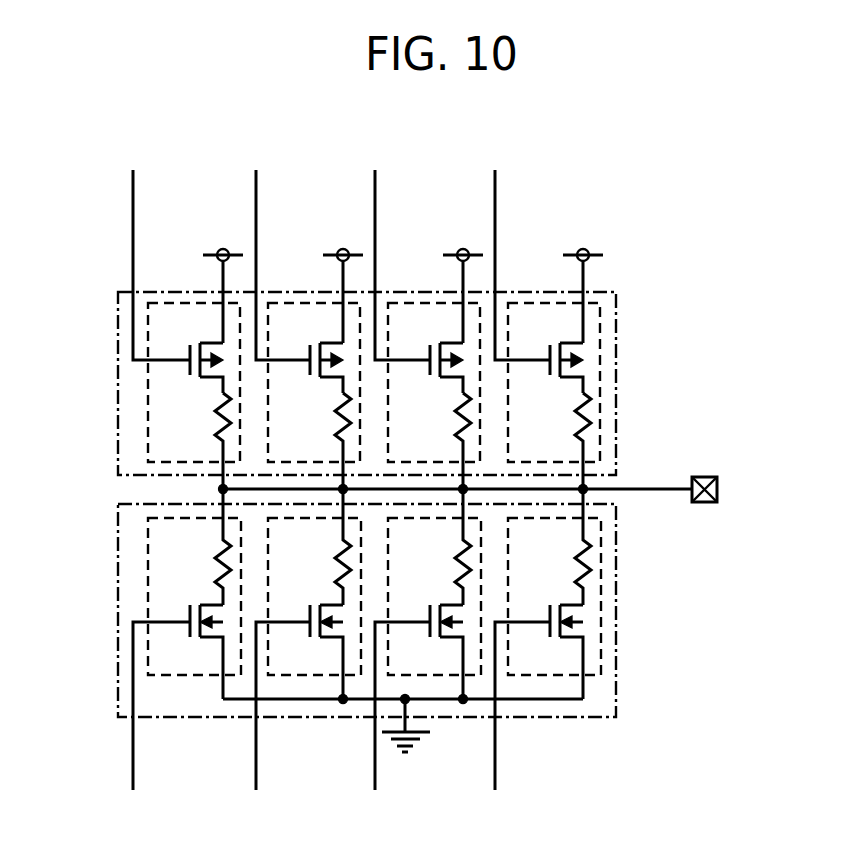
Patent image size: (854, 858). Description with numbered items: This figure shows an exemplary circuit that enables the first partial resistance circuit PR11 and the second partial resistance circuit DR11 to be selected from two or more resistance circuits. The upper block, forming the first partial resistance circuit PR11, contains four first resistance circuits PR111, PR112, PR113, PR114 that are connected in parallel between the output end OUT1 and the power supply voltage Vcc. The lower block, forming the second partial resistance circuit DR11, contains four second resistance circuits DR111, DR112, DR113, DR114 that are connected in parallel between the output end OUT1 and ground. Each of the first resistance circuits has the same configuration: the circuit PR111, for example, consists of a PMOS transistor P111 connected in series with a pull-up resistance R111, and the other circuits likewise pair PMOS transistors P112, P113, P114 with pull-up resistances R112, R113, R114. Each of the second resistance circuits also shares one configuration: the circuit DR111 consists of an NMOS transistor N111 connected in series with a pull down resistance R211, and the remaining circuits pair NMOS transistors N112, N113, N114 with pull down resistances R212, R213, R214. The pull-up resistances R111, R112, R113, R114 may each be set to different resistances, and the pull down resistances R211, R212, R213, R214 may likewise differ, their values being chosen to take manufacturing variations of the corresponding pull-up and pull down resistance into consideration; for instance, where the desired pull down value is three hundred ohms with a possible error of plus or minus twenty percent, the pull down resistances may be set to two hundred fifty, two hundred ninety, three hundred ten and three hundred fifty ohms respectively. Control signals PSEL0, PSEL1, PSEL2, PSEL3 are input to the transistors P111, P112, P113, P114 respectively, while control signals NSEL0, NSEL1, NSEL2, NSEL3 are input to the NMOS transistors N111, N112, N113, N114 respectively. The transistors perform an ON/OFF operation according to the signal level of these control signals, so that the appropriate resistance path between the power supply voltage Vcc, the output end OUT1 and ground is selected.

The first partial resistance circuit PR11 is at (641, 380).
The second partial resistance circuit DR11 is at (641, 603).
The first resistance circuit PR111 is at (190, 342).
The first resistance circuit PR112 is at (315, 342).
The first resistance circuit PR113 is at (435, 342).
The first resistance circuit PR114 is at (555, 342).
The second resistance circuit DR111 is at (194, 628).
The second resistance circuit DR112 is at (314, 628).
The second resistance circuit DR113 is at (437, 633).
The second resistance circuit DR114 is at (555, 628).
The PMOS transistor P111 is at (193, 355).
The PMOS transistor P112 is at (313, 355).
The PMOS transistor P113 is at (433, 355).
The PMOS transistor P114 is at (553, 355).
The pull-up resistance R111 is at (192, 441).
The pull-up resistance R112 is at (312, 441).
The pull-up resistance R113 is at (432, 441).
The pull-up resistance R114 is at (552, 441).
The pull down resistance R211 is at (193, 547).
The pull down resistance R212 is at (313, 547).
The pull down resistance R213 is at (433, 547).
The pull down resistance R214 is at (553, 547).
The NMOS transistor N111 is at (193, 652).
The NMOS transistor N112 is at (313, 652).
The NMOS transistor N113 is at (433, 652).
The NMOS transistor N114 is at (553, 652).
The output end OUT1 is at (503, 490).
The power supply voltage Vcc is at (222, 285).
The control signal PSEL0 is at (143, 251).
The control signal PSEL1 is at (265, 251).
The control signal PSEL2 is at (385, 251).
The control signal PSEL3 is at (504, 251).
The control signal NSEL0 is at (144, 722).
The control signal NSEL1 is at (266, 722).
The control signal NSEL2 is at (385, 722).
The control signal NSEL3 is at (504, 722).